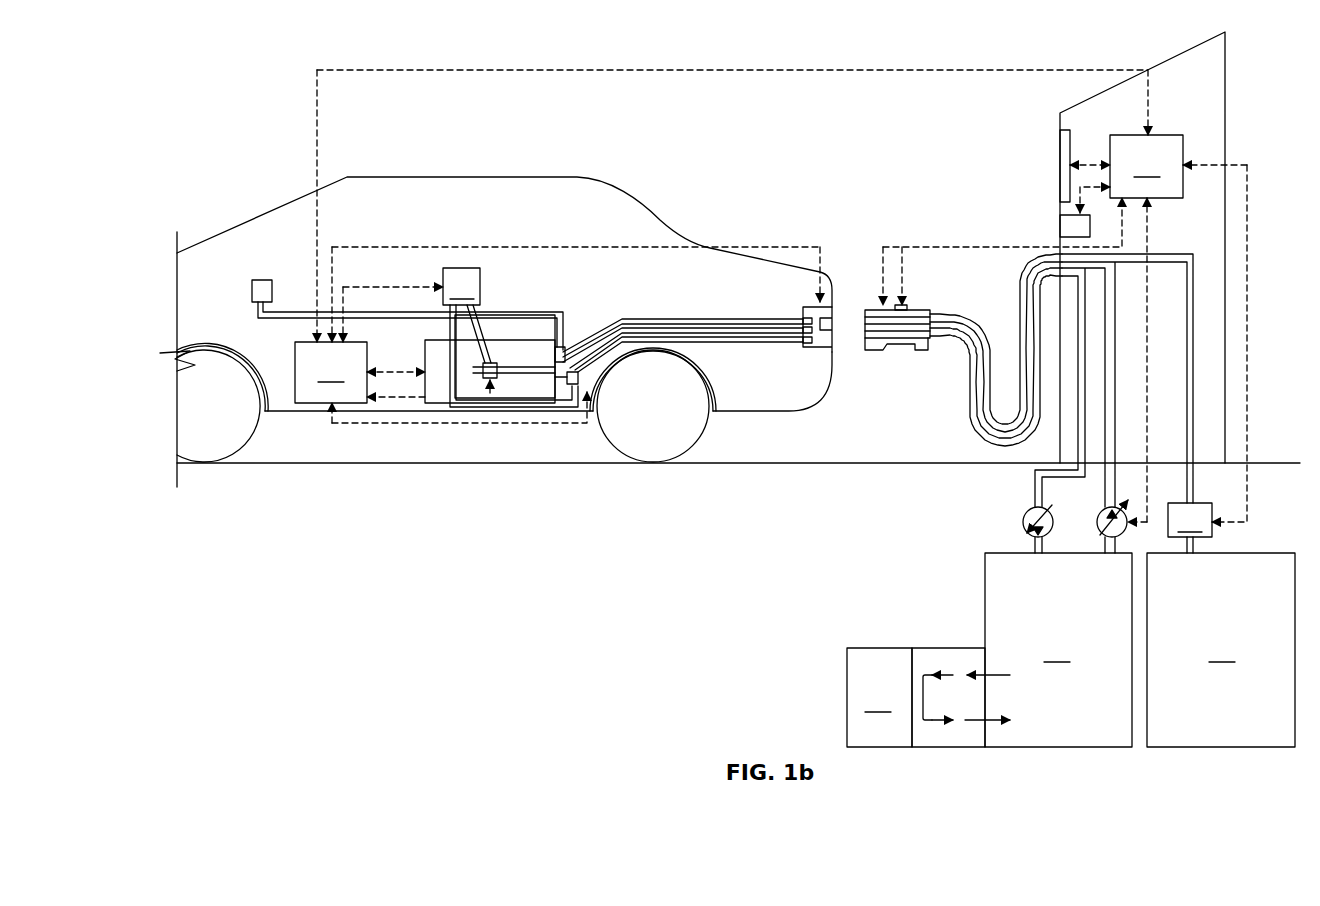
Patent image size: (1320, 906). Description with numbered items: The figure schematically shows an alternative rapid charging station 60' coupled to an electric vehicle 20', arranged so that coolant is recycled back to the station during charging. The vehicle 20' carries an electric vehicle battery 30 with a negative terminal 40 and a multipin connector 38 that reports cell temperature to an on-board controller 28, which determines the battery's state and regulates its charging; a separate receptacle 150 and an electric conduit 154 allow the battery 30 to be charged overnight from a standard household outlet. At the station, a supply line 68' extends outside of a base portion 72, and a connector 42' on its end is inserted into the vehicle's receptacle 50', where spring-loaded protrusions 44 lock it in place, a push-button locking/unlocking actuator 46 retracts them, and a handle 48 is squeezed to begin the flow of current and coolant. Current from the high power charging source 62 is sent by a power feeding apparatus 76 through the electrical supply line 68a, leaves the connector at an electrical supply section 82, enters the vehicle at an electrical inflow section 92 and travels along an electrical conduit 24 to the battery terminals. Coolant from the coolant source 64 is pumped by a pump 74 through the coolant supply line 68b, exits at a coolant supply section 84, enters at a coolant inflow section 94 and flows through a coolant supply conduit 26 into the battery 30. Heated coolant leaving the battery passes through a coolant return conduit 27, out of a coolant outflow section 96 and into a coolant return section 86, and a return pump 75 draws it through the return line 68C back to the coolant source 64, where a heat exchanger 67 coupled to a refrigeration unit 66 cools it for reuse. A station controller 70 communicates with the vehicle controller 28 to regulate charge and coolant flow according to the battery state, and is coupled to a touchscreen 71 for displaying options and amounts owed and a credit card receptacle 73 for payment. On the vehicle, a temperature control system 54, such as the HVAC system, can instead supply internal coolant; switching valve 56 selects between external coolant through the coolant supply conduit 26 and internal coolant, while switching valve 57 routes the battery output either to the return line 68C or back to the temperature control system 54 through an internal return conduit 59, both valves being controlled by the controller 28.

The electric vehicle 20' is at (496, 325).
The electrical conduit 24 is at (641, 319).
The coolant supply conduit 26 is at (688, 328).
The coolant return conduit 27 is at (724, 342).
The controller 28 is at (331, 372).
The electric vehicle battery 30 is at (437, 340).
The multipin connector 38 is at (555, 360).
The negative terminal 40 is at (557, 350).
The connector 42' is at (904, 379).
The protrusions 44 is at (878, 308).
The locking/unlocking actuator 46 is at (907, 308).
The handle 48 is at (918, 349).
The receptacle 50' is at (843, 378).
The temperature control system 54 is at (510, 337).
The switching valve 56 is at (495, 378).
The switching valve 57 is at (578, 378).
The internal return conduit 59 is at (473, 404).
The rapid charging station 60' is at (1071, 383).
The high power charging source 62 is at (1221, 650).
The coolant source 64 is at (1058, 650).
The refrigeration unit 66 is at (879, 697).
The heat exchanger 67 is at (955, 646).
The hose assembly 68' is at (1061, 356).
The electrical supply line 68a is at (947, 313).
The coolant supply line 68b is at (978, 362).
The return line 68C is at (1012, 440).
The controller 70 is at (1146, 166).
The touchscreen 71 is at (1061, 172).
The base portion 72 is at (1227, 95).
The credit card receptacle 73 is at (1061, 225).
The pump 74 is at (1098, 517).
The return pump 75 is at (1022, 525).
The power feeding apparatus 76 is at (1190, 528).
The electrical supply section 82 is at (866, 328).
The coolant supply section 84 is at (866, 322).
The coolant return section 86 is at (866, 346).
The electrical inflow section 92 is at (800, 318).
The coolant inflow section 94 is at (800, 328).
The coolant outflow section 96 is at (800, 340).
The receptacle 150 is at (252, 290).
The electric conduit 154 is at (280, 312).